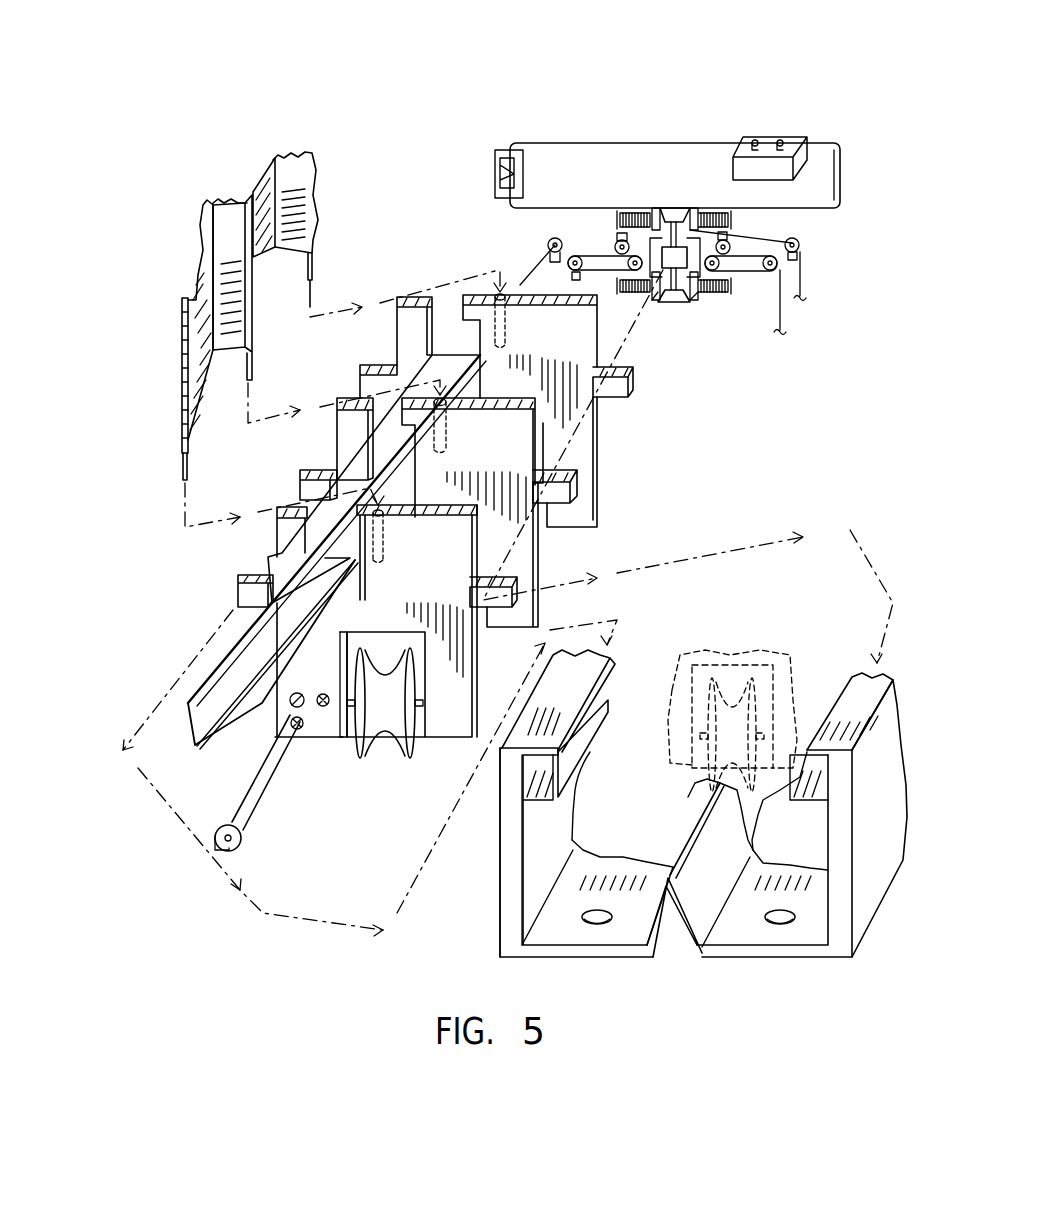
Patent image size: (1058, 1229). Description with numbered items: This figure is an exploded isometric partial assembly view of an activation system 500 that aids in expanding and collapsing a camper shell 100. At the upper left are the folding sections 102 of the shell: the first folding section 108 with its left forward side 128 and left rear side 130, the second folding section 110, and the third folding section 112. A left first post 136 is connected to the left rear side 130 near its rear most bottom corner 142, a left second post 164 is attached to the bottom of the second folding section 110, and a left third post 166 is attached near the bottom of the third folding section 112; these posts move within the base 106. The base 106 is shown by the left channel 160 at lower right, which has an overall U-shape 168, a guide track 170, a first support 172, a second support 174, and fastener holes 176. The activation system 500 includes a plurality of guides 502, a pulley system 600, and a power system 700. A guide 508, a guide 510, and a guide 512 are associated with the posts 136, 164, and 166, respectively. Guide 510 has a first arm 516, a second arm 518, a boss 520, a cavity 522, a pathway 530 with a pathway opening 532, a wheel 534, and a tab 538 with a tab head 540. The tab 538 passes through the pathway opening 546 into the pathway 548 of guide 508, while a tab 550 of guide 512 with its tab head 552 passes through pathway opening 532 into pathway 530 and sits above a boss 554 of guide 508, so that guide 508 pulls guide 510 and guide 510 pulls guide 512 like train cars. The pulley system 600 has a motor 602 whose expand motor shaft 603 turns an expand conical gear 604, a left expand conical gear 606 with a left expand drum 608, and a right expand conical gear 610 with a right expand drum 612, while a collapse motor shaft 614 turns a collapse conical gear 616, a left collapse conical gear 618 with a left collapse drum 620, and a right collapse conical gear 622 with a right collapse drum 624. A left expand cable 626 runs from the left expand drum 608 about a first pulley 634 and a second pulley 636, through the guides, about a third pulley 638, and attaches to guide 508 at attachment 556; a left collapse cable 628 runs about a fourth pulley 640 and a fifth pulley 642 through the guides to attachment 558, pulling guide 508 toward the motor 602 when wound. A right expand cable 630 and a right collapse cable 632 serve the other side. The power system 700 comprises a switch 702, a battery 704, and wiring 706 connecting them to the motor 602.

The camper shell 100 is at (455, 72).
The folding sections 102 is at (185, 340).
The base 106 is at (837, 947).
The first folding section 108 is at (200, 240).
The second folding section 110 is at (283, 158).
The third folding section 112 is at (312, 155).
The left forward side 128 is at (228, 222).
The left rear side 130 is at (195, 278).
The left first post 136 is at (180, 465).
The rear most bottom corner 142 is at (190, 433).
The left channel 160 is at (763, 950).
The left second post 164 is at (257, 372).
The left third post 166 is at (312, 272).
The overall U-shape 168 is at (508, 833).
The guide track 170 is at (690, 920).
The first support 172 is at (795, 790).
The second support 174 is at (590, 752).
The fastener holes 176 is at (597, 925).
The activation system 500 is at (828, 128).
The guides 502 is at (598, 483).
The guide 508 is at (470, 650).
The guide 510 is at (537, 610).
The guide 512 is at (598, 505).
The first arm 516 is at (570, 527).
The second arm 518 is at (310, 479).
The boss 520 is at (412, 418).
The cavity 522 is at (450, 400).
The pathway 530 is at (355, 428).
The pathway opening 532 is at (360, 398).
The wheel 534 is at (705, 790).
The tab 538 is at (258, 652).
The tab head 540 is at (213, 717).
The pathway opening 546 is at (277, 545).
The pathway 548 is at (360, 580).
The tab 550 is at (325, 487).
The tab head 552 is at (277, 566).
The boss 554 is at (383, 545).
The attachment 556 is at (300, 728).
The attachment 558 is at (345, 735).
The pulley system 600 is at (664, 289).
The motor 602 is at (750, 265).
The expand motor shaft 603 is at (692, 232).
The expand conical gear 604 is at (668, 210).
The left expand conical gear 606 is at (662, 210).
The left expand drum 608 is at (618, 215).
The right expand conical gear 610 is at (692, 228).
The right expand drum 612 is at (725, 212).
The collapse motor shaft 614 is at (680, 300).
The collapse conical gear 616 is at (677, 300).
The left collapse conical gear 618 is at (673, 293).
The left collapse drum 620 is at (632, 284).
The right collapse conical gear 622 is at (690, 300).
The right collapse drum 624 is at (720, 285).
The left expand cable 626 is at (248, 790).
The left collapse cable 628 is at (325, 705).
The right expand cable 630 is at (800, 300).
The right collapse cable 632 is at (780, 333).
The first pulley 634 is at (618, 245).
The second pulley 636 is at (540, 222).
The third pulley 638 is at (235, 840).
The fourth pulley 640 is at (610, 265).
The fifth pulley 642 is at (565, 272).
The power system 700 is at (605, 143).
The switch 702 is at (508, 148).
The battery 704 is at (765, 143).
The wiring 706 is at (840, 178).